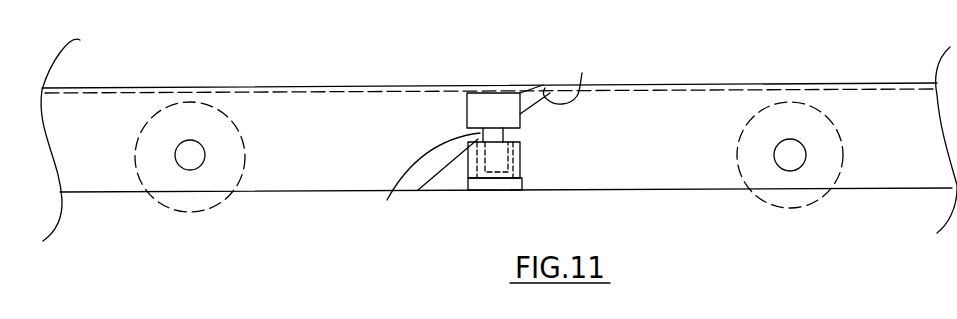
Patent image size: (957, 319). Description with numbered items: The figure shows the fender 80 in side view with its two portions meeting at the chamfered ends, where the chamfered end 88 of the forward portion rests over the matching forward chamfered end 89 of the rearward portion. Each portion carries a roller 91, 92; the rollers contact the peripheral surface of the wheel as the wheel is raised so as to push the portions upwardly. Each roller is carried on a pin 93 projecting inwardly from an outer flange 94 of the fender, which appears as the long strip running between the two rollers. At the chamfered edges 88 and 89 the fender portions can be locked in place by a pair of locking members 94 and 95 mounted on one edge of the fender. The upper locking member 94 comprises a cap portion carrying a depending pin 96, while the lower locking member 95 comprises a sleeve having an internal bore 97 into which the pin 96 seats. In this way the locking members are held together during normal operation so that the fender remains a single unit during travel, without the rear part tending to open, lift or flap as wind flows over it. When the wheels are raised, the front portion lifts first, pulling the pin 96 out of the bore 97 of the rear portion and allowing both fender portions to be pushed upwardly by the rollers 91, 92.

The strip 80 is at (490, 69).
The chamfered end 88 is at (548, 93).
The forward chamfered end 89 is at (577, 74).
The roller 91 is at (167, 206).
The roller 92 is at (820, 200).
The pin 93 is at (173, 157).
The outer flange / locking member 94 is at (339, 157).
The lower locking member 95 is at (521, 148).
The depending pin 96 is at (435, 182).
The internal bore 97 is at (477, 192).